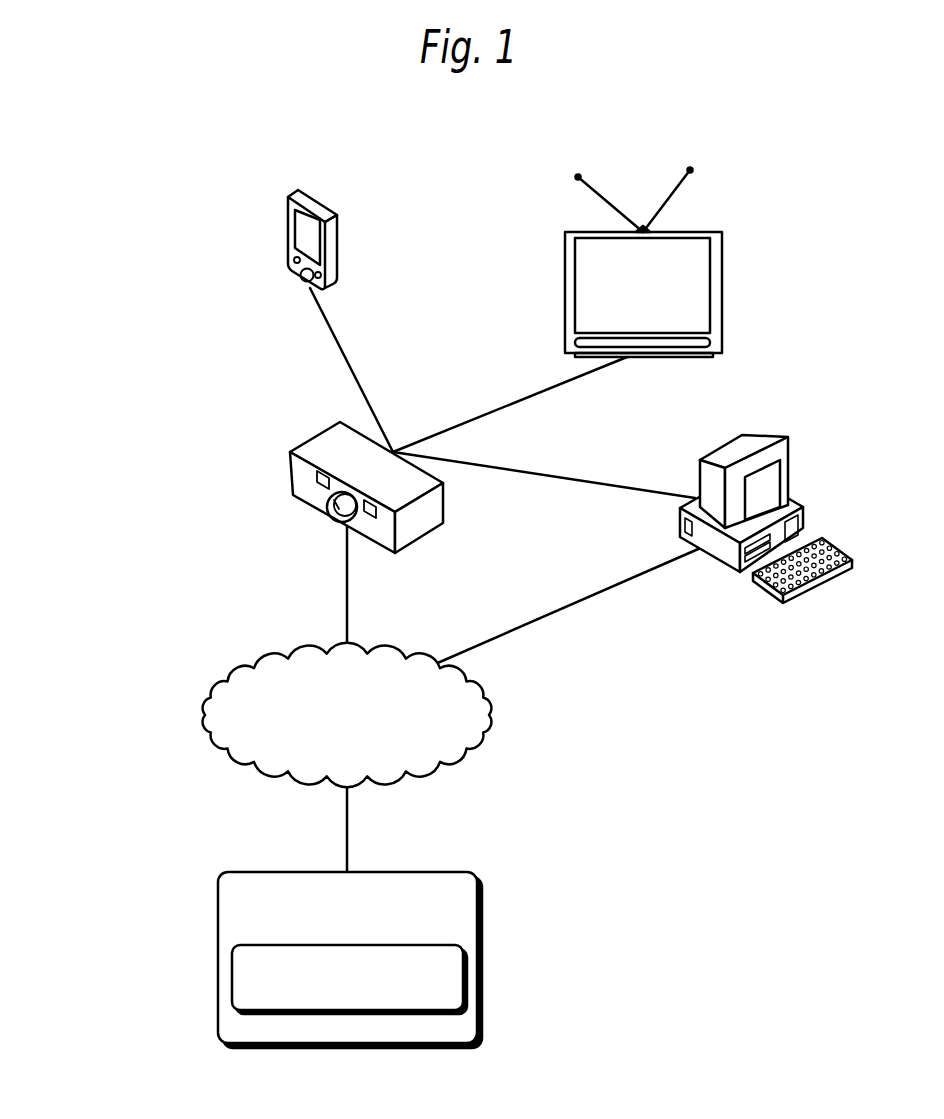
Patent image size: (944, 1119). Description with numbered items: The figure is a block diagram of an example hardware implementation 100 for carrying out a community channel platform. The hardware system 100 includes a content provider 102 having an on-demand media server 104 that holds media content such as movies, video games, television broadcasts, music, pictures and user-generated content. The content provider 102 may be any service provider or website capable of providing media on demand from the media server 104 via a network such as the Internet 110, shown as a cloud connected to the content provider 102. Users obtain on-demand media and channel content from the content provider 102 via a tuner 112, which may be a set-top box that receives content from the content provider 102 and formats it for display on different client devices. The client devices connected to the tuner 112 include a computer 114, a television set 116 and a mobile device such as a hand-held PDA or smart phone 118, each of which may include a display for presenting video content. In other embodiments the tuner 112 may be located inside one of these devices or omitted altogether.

The hardware implementation 100 is at (112, 281).
The content provider 102 is at (382, 944).
The on-demand media server 104 is at (454, 967).
The Internet 110 is at (330, 742).
The tuner 112 is at (308, 445).
The computer 114 is at (766, 511).
The television set 116 is at (627, 263).
The smart phone 118 is at (296, 227).